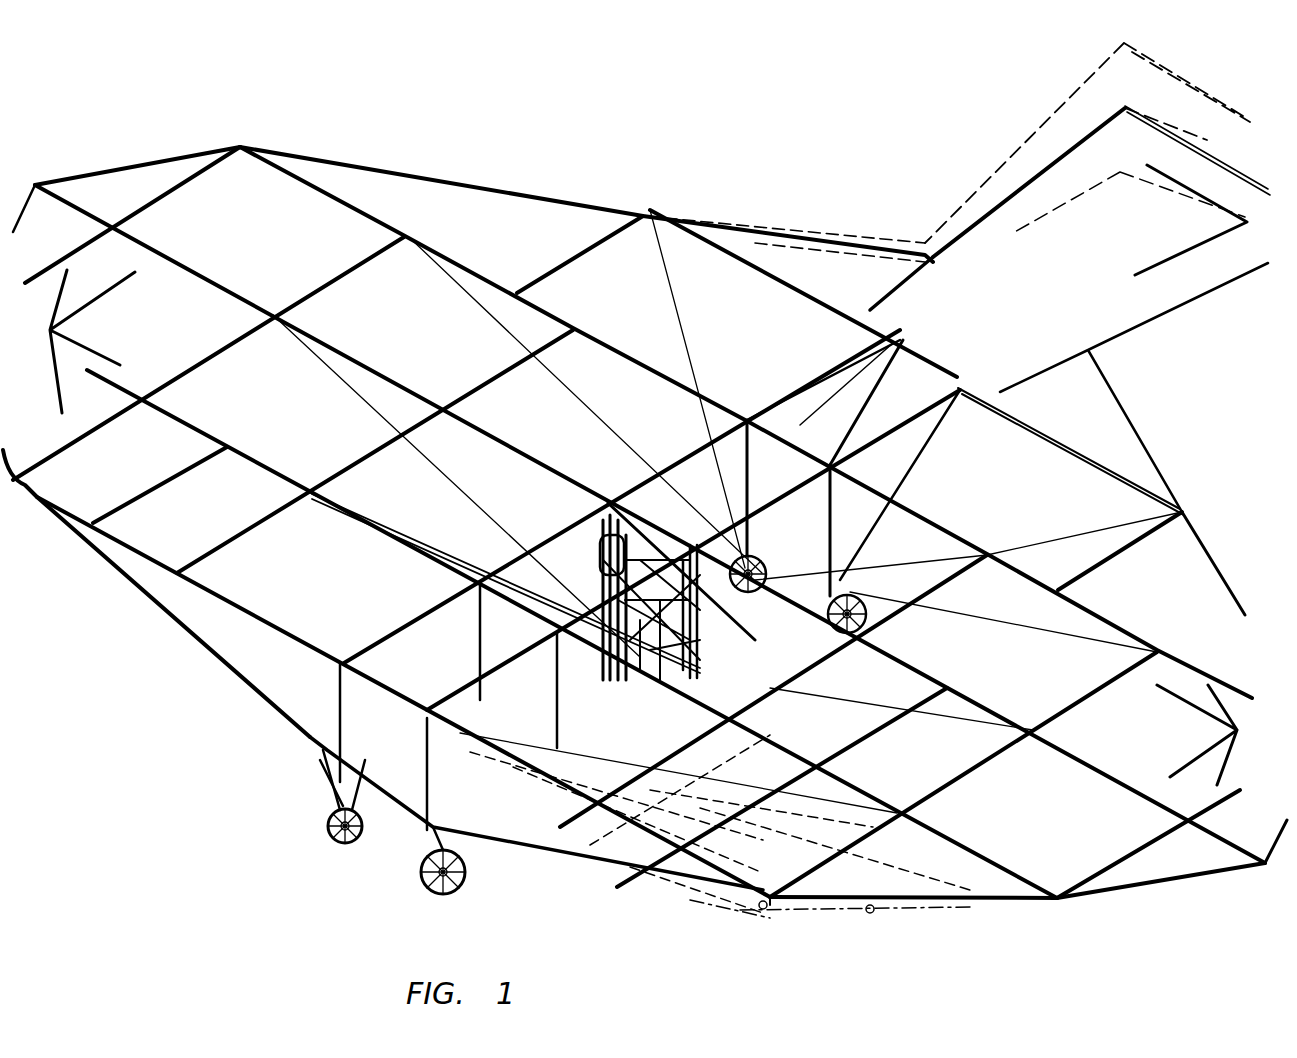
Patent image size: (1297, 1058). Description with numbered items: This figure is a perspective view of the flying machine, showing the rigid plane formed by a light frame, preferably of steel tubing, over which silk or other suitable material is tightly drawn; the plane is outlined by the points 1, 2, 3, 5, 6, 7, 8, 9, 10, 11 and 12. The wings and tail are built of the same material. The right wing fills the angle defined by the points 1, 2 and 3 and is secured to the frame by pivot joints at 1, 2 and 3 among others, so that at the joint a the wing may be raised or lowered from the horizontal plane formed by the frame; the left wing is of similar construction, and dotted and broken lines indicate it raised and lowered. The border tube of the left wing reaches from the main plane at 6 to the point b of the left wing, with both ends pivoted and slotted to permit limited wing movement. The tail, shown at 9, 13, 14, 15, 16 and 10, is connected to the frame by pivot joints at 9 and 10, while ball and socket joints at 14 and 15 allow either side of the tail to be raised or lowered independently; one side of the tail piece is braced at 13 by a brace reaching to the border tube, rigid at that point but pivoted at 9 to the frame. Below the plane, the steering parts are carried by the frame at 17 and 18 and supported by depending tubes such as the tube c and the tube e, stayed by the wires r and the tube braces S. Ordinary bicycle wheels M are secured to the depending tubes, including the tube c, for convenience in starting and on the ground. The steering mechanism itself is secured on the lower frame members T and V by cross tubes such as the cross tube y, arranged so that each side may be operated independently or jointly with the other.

The pivot joint 1 is at (82, 346).
The pivot joint 2 is at (388, 665).
The pivot joint 3 is at (396, 713).
The plane frame point 5 is at (1044, 623).
The main plane point 6 is at (1146, 856).
The plane frame point 7 is at (1274, 854).
The plane frame point 8 is at (1205, 735).
The tail pivot joint 9 is at (1213, 553).
The tail pivot joint 10 is at (694, 379).
The plane frame point 11 is at (139, 204).
The plane frame point 12 is at (28, 198).
The tail brace point 13 is at (1134, 387).
The ball and socket joint 14 is at (1143, 220).
The ball and socket joint 15 is at (1097, 143).
The tail point 16 is at (1028, 196).
The frame point 17 is at (746, 474).
The frame point 18 is at (831, 518).
The wing joint a is at (156, 593).
The left wing point b is at (904, 910).
The stay wires r is at (727, 526).
The tube braces S is at (630, 573).
The bicycle wheels M is at (603, 725).
The depending tube c is at (724, 573).
The depending tube e is at (531, 648).
The lower frame member V is at (779, 631).
The cross tube y is at (792, 555).
The lower frame member T is at (872, 472).